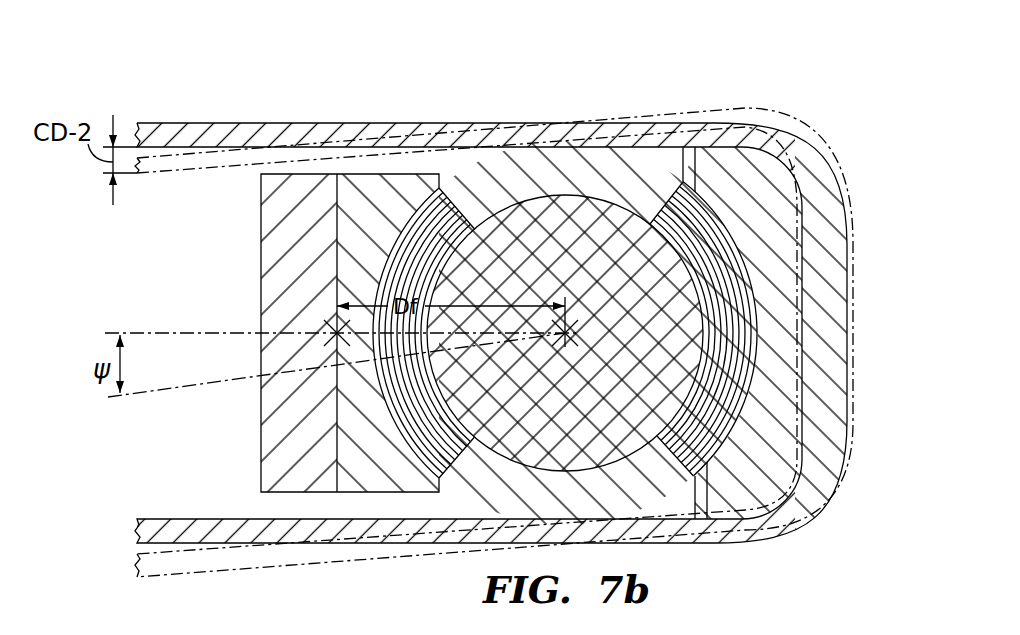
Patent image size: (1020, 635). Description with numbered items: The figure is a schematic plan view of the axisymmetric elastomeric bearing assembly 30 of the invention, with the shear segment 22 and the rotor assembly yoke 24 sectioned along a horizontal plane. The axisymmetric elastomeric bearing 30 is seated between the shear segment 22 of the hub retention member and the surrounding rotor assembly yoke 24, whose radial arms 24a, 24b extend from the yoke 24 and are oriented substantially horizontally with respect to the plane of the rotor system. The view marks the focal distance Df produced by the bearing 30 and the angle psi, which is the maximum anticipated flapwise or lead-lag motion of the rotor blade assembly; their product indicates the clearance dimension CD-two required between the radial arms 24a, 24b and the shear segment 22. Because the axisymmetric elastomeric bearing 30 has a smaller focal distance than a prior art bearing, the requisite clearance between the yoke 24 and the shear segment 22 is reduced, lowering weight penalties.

The shear segment 22 is at (272, 273).
The rotor assembly yoke 24 is at (650, 80).
The radial arm 24a is at (183, 137).
The radial arm 24b is at (140, 557).
The axisymmetric elastomeric bearing 30 is at (608, 186).